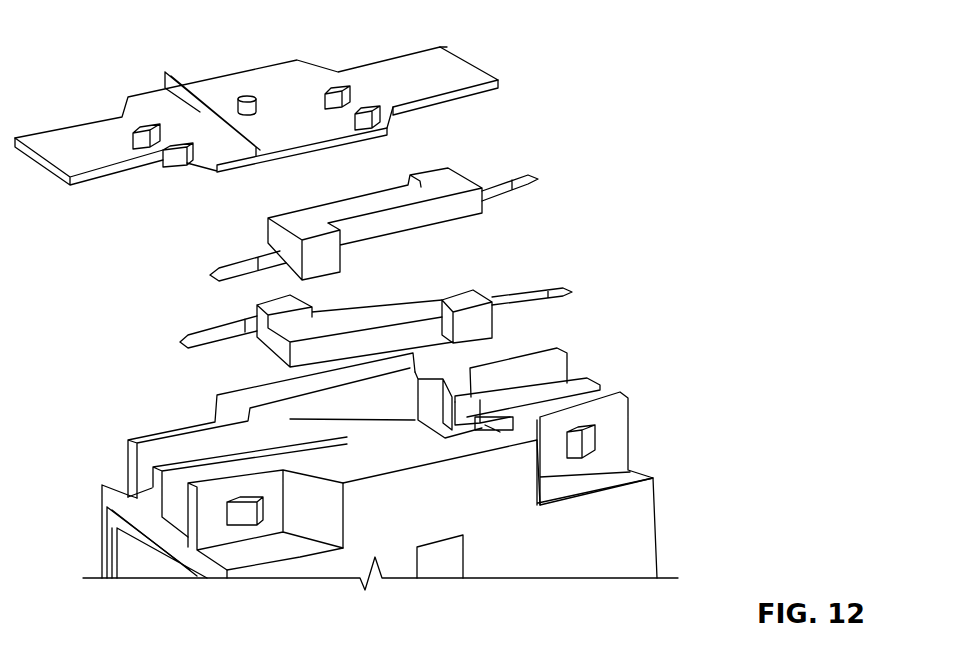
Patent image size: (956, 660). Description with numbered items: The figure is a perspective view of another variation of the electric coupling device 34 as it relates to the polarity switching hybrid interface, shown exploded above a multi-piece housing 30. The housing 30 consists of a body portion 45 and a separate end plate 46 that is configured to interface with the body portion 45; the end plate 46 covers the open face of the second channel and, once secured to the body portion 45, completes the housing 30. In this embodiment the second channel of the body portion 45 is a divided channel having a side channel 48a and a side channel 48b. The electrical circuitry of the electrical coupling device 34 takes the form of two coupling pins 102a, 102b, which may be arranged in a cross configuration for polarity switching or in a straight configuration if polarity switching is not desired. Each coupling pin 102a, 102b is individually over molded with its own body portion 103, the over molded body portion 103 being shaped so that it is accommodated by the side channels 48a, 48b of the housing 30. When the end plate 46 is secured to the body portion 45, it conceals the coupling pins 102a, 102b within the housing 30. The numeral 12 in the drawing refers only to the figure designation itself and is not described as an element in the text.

The electrical connector 12 is at (94, 416).
The housing 30 is at (610, 341).
The electrical coupling device 34 is at (566, 155).
The body portion 45 is at (633, 469).
The end plate 46 is at (402, 78).
The side channel 48a is at (110, 487).
The side channel 48b is at (177, 522).
The coupling pin 102a is at (210, 276).
The coupling pin 102b is at (180, 342).
The body portion 103 is at (347, 202).